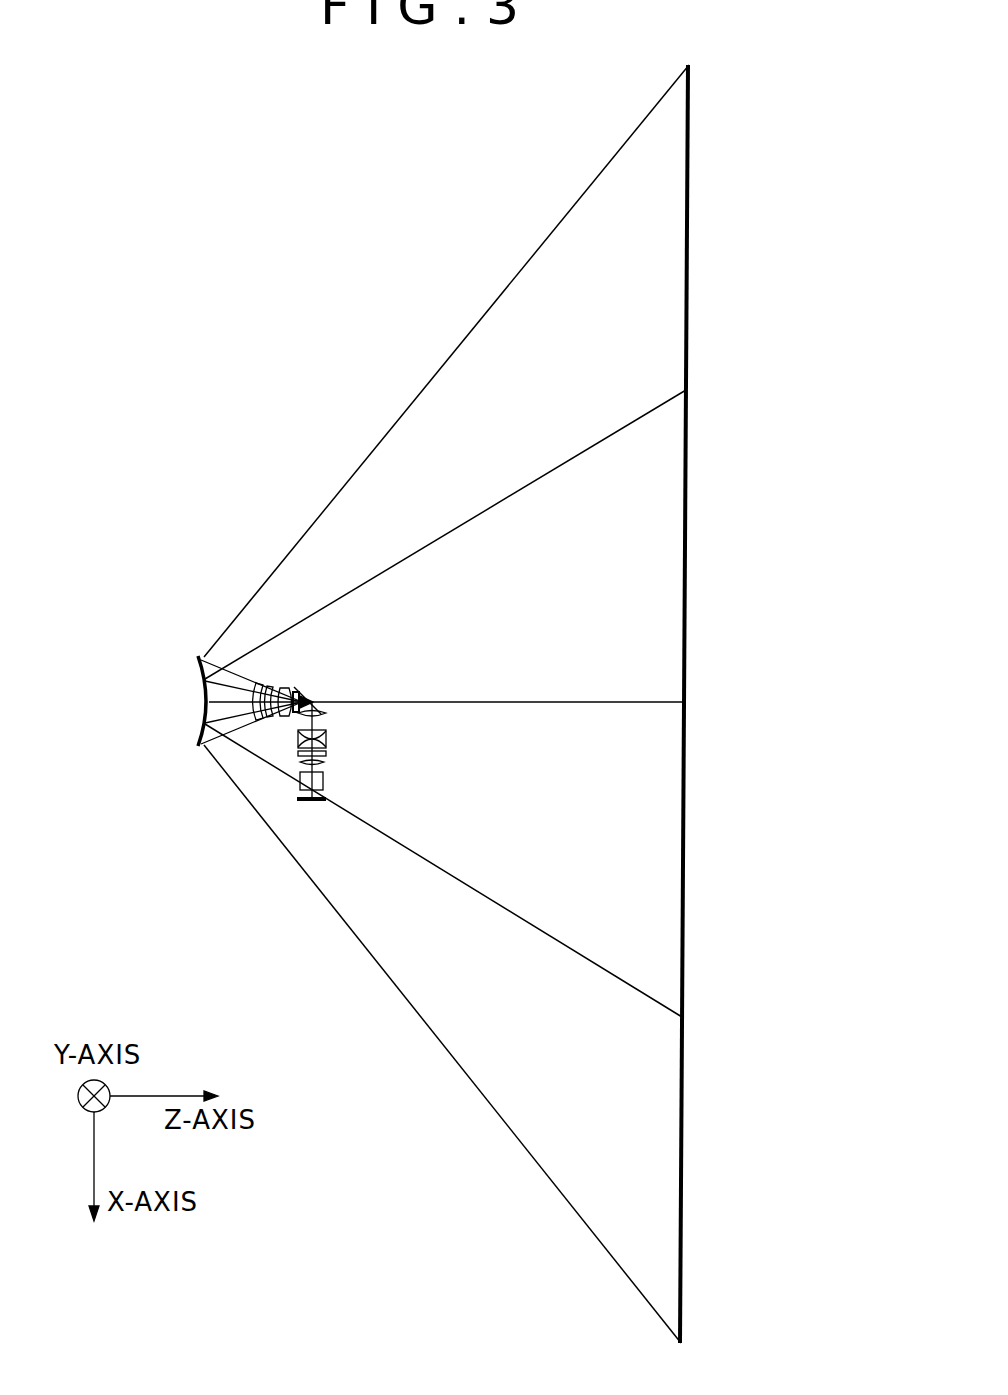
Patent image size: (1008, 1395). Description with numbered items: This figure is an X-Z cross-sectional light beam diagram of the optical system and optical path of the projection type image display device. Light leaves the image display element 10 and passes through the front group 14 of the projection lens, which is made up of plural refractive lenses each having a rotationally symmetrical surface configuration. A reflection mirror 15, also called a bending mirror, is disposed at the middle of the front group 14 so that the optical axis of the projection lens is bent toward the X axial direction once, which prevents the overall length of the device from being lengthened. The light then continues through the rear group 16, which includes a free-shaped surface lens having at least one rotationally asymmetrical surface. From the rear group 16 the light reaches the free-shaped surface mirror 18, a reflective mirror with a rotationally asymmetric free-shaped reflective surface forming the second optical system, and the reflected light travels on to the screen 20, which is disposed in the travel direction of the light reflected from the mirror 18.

The image display element 10 is at (316, 802).
The front group 14 is at (340, 713).
The reflection mirror 15 is at (305, 693).
The rear group 16 is at (257, 680).
The free-shaped surface mirror 18 is at (203, 709).
The screen 20 is at (686, 572).